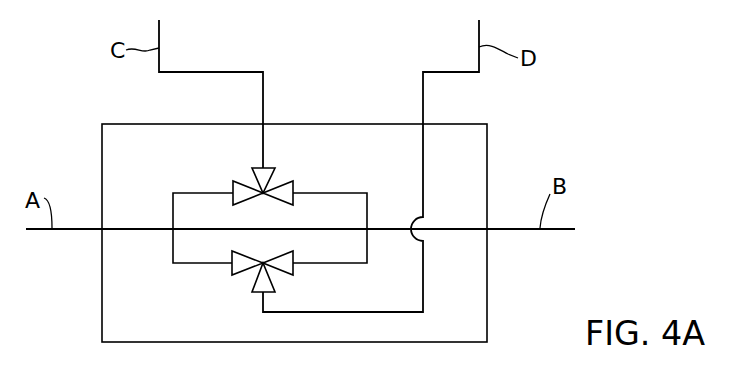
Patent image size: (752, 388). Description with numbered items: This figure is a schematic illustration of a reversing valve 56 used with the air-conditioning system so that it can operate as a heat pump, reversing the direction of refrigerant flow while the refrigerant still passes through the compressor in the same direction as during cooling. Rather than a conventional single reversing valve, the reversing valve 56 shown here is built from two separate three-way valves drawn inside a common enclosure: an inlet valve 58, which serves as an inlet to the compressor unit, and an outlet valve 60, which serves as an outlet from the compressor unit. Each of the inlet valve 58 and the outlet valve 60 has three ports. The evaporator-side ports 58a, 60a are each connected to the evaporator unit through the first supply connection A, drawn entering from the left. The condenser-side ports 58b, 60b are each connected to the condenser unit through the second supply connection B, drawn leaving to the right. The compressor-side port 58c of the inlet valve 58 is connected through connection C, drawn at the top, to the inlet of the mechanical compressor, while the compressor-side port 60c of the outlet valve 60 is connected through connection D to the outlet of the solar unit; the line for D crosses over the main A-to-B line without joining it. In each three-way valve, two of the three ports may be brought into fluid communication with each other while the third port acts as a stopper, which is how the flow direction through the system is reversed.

The reversing valve 56 is at (487, 138).
The inlet valve 58 is at (262, 188).
The evaporator-side port 58a is at (245, 188).
The condenser-side port 58b is at (296, 190).
The compressor-side port 58c is at (272, 180).
The outlet valve 60 is at (260, 276).
The evaporator-side port 60a is at (243, 267).
The condenser-side port 60b is at (290, 272).
The compressor-side port 60c is at (267, 246).